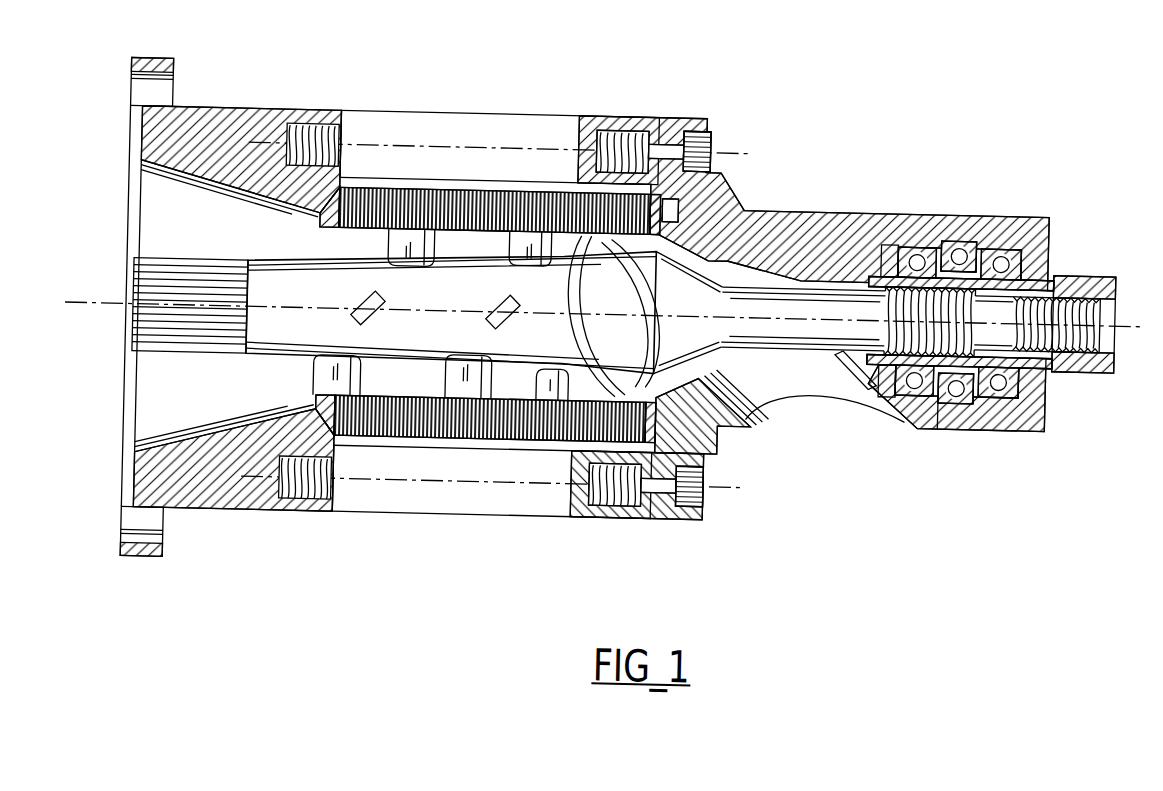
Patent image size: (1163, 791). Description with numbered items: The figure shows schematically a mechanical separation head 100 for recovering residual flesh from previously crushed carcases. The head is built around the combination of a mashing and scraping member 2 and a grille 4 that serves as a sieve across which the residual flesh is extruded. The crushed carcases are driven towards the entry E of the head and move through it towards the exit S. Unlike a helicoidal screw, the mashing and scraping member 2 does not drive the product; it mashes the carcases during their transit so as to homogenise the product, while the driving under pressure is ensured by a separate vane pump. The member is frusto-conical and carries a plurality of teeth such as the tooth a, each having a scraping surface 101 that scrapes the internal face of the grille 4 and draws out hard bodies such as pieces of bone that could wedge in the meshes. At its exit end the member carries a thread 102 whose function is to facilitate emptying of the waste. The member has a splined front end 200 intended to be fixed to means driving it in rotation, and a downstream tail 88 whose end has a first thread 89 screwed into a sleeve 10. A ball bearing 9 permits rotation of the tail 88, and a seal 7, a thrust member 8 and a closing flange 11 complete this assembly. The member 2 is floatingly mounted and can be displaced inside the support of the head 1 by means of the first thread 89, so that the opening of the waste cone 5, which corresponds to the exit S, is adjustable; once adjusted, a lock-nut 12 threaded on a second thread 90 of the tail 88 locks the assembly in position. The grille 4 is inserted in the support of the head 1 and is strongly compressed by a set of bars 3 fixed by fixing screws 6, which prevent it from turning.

The support of the head 1 is at (150, 106).
The mashing and scraping member 2 is at (277, 276).
The bars 3 is at (424, 127).
The grille 4 is at (558, 179).
The waste cone 5 is at (690, 216).
The fixing screws 6 is at (692, 126).
The seal 7 is at (890, 246).
The thrust member 8 is at (922, 228).
The ball bearing 9 is at (969, 210).
The sleeve 10 is at (940, 389).
The closing flange 11 is at (1033, 411).
The lock-nut 12 is at (1093, 343).
The tail 88 is at (783, 318).
The first thread 89 is at (880, 352).
The second thread 90 is at (1063, 346).
The mechanical separation head 100 is at (299, 522).
The scraping surface 101 is at (484, 310).
The thread 102 is at (700, 410).
The splined front end 200 is at (163, 318).
The entry E is at (160, 233).
The exit S is at (782, 421).
The tooth a is at (550, 382).